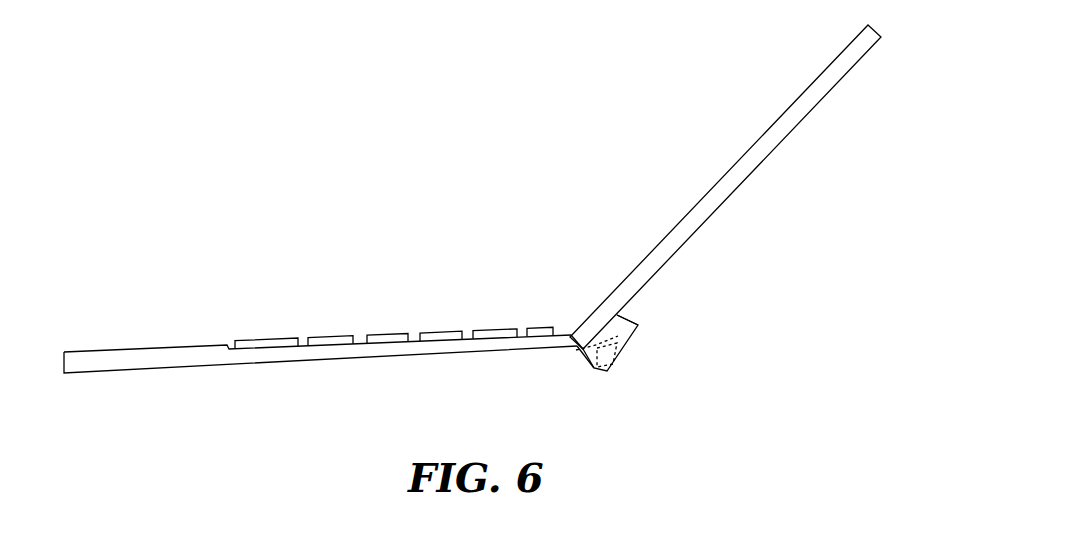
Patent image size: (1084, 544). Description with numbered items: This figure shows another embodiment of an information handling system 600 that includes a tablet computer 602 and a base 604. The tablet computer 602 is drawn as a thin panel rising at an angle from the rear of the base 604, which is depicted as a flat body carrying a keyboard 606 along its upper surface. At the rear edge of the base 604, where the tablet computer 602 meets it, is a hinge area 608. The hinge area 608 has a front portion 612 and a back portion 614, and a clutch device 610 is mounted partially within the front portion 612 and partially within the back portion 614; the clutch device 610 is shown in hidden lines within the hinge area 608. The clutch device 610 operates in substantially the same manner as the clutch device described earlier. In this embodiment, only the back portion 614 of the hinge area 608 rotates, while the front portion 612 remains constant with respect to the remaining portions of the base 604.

The information handling system 600 is at (513, 80).
The tablet computer 602 is at (783, 127).
The base 604 is at (155, 353).
The keyboard 606 is at (390, 325).
The hinge area 608 is at (640, 367).
The clutch device 610 is at (593, 363).
The front portion 612 is at (567, 343).
The back portion 614 is at (633, 330).